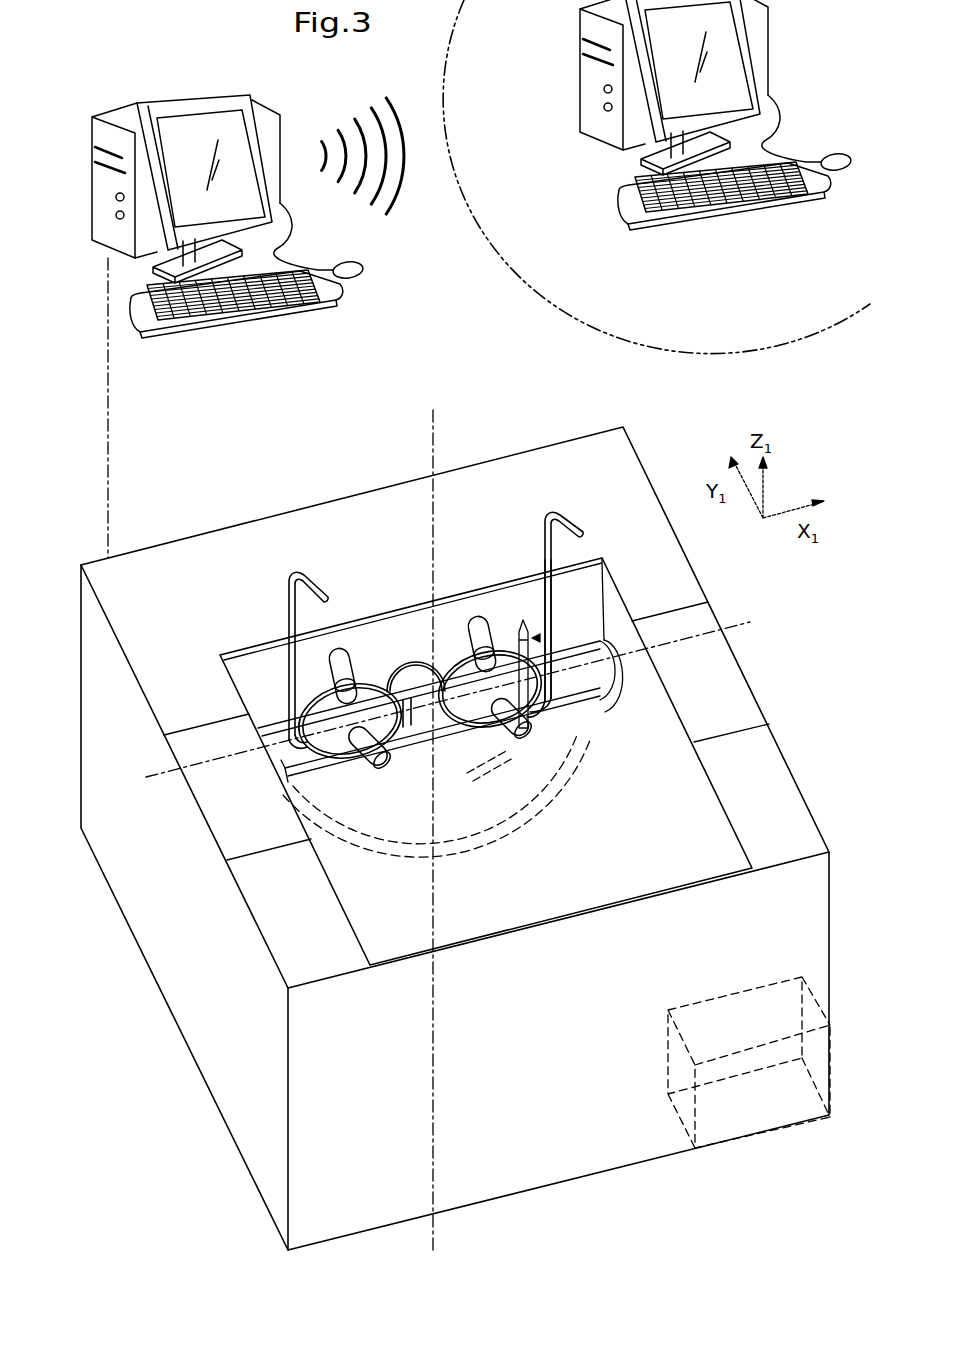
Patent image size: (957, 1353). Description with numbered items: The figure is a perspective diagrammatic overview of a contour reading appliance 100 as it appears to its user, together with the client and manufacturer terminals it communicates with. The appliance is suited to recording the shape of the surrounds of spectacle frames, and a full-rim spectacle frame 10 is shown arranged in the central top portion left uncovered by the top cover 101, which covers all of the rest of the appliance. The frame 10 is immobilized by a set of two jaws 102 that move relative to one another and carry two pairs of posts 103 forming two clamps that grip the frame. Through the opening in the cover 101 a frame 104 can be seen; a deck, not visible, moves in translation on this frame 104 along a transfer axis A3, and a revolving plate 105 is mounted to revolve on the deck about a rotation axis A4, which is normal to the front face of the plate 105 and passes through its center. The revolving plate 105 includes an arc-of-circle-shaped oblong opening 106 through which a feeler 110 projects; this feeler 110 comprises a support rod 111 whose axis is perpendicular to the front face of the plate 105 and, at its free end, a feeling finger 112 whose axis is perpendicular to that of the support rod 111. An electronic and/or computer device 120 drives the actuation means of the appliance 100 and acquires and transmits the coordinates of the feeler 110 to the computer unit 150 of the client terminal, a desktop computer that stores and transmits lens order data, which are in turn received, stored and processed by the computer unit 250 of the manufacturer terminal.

The full-rim spectacle frame 10 is at (447, 747).
The contour reading appliance 100 is at (242, 503).
The top cover 101 is at (778, 752).
The jaws 102 is at (242, 658).
The posts 103 is at (305, 660).
The frame 104 is at (605, 705).
The revolving plate 105 is at (290, 745).
The arc-of-circle-shaped oblong opening 106 is at (499, 757).
The feeler 110 is at (603, 559).
The support rod 111 is at (518, 726).
The feeling finger 112 is at (533, 612).
The electronic and/or computer device 120 is at (768, 1113).
The computer unit 150 is at (124, 100).
The computer unit 250 is at (596, 173).
The transfer axis A3 is at (148, 778).
The rotation axis A4 is at (428, 442).